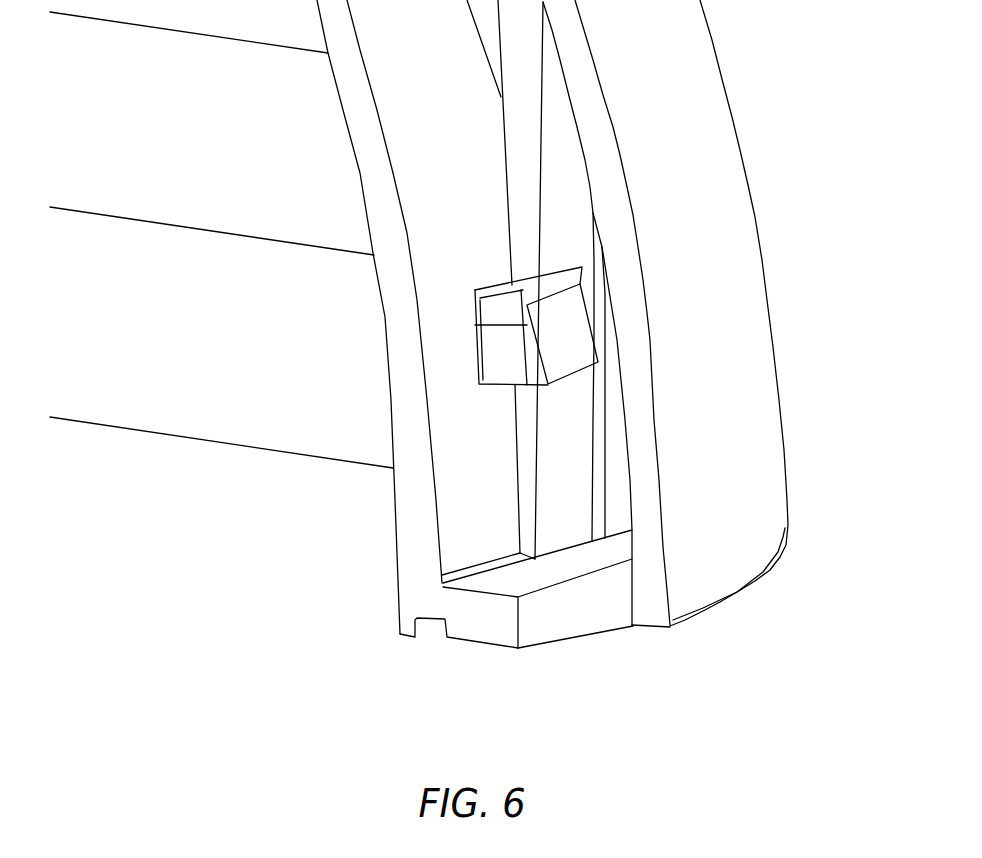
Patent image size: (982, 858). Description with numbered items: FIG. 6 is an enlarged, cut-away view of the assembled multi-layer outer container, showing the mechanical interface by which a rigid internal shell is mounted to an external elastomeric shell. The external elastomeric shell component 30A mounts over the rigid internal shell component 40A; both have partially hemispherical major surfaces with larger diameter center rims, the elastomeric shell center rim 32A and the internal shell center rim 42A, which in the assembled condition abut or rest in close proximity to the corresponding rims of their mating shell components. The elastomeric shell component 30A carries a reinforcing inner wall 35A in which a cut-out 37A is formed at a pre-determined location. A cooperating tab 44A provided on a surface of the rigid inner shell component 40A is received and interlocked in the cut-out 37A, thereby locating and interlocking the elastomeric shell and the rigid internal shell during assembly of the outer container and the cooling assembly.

The external elastomeric shell component 30A is at (742, 232).
The elastomeric shell center rim 32A is at (650, 627).
The reinforcing inner wall 35A is at (557, 432).
The cut-out 37A is at (522, 287).
The rigid internal shell component 40A is at (410, 505).
The internal shell center rim 42A is at (500, 628).
The tab 44A is at (555, 345).